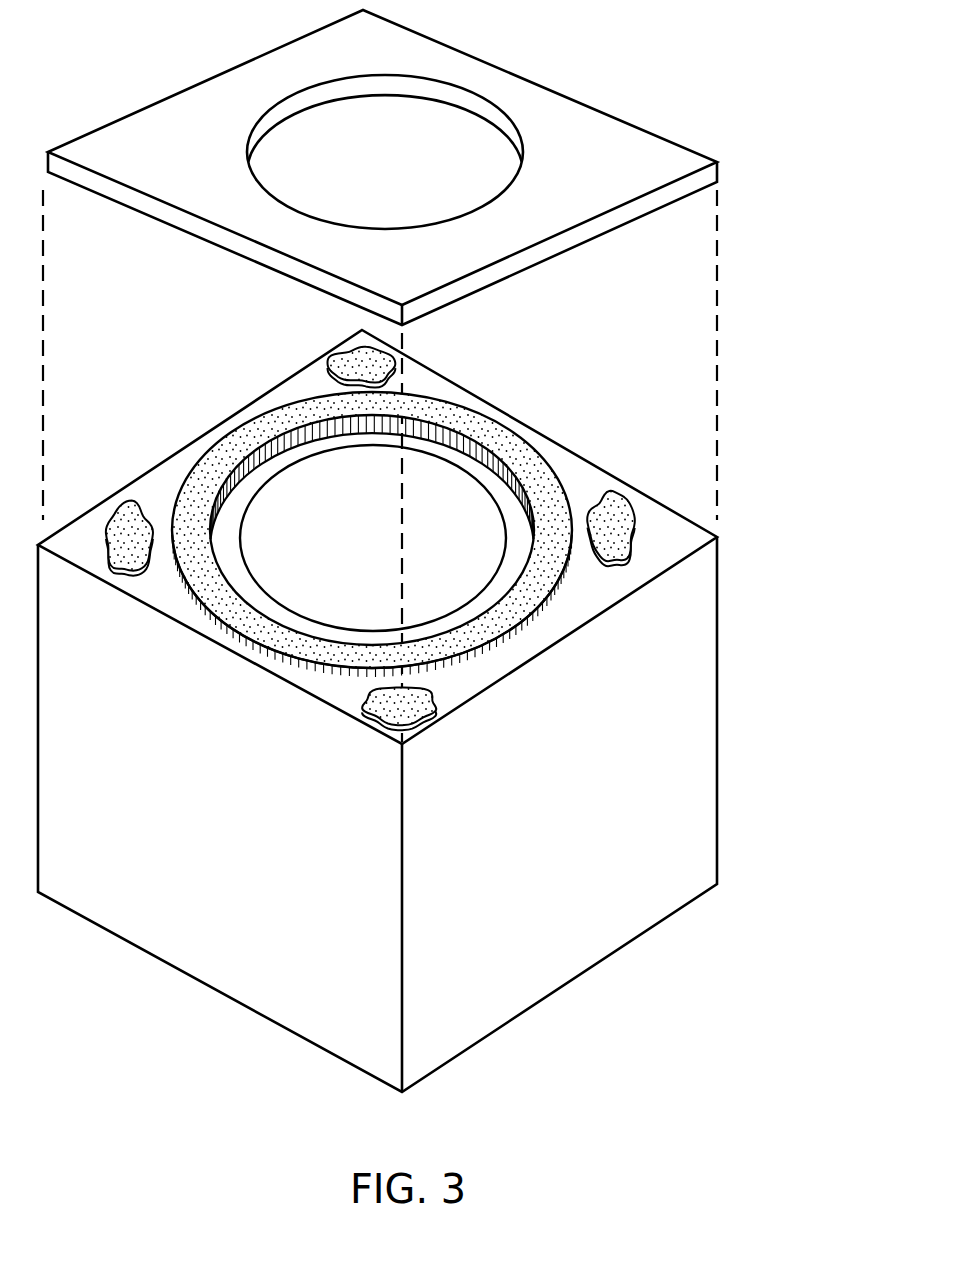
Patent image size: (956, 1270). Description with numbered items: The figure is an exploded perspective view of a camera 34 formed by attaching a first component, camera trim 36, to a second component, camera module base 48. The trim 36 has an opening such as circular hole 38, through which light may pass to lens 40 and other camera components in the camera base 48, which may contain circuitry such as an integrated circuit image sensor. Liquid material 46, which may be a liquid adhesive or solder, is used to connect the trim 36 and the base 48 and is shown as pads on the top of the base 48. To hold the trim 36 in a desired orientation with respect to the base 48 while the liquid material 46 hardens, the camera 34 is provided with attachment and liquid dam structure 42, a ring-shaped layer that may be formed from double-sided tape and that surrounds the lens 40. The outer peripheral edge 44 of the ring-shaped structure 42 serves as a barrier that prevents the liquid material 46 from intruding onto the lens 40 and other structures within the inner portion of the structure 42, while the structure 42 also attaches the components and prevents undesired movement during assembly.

The camera 34 is at (777, 23).
The camera trim 36 is at (632, 145).
The circular hole 38 is at (448, 125).
The lens 40 is at (432, 468).
The attachment and liquid dam structure 42 is at (540, 468).
The outer peripheral edge 44 is at (562, 582).
The liquid material 46 is at (343, 360).
The camera module base 48 is at (697, 745).